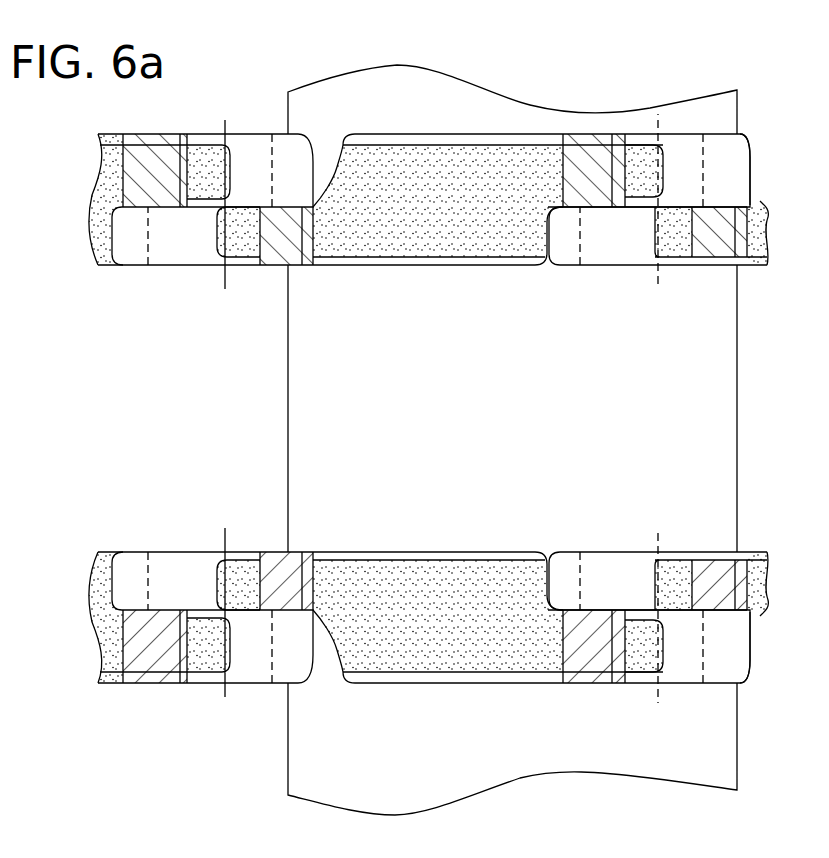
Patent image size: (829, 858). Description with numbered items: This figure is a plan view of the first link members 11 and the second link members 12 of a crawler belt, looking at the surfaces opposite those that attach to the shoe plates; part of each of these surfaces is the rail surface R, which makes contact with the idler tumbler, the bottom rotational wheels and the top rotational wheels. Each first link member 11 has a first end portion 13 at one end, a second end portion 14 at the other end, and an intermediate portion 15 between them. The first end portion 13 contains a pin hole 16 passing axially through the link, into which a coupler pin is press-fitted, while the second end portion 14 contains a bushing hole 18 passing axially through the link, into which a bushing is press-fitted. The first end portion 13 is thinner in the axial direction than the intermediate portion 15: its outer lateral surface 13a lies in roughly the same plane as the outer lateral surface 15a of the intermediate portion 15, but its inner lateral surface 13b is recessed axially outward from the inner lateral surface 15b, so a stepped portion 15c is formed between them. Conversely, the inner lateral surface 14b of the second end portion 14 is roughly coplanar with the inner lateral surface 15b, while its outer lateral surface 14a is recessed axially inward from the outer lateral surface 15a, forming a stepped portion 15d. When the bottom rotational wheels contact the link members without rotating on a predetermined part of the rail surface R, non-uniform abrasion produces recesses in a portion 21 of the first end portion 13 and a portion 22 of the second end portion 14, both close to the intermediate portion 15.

The first link member 11 is at (526, 510).
The second link member 12 is at (525, 112).
The first end portion 13 is at (650, 687).
The outer lateral surface of the first end portion 13a is at (699, 687).
The inner lateral surface of the first end portion 13b is at (675, 600).
The second end portion 14 is at (203, 532).
The outer lateral surface of the second end portion 14a is at (245, 613).
The inner lateral surface of the second end portion 14b is at (172, 551).
The intermediate portion 15 is at (390, 527).
The outer lateral surface of the intermediate portion 15a is at (465, 687).
The inner lateral surface of the intermediate portion 15b is at (427, 551).
The stepped portion 15c is at (552, 572).
The stepped portion 15d is at (329, 646).
The pin hole 16 is at (748, 655).
The bushing hole 18 is at (128, 576).
The portion of the first end portion 21 is at (584, 687).
The portion of the second end portion 22 is at (285, 558).
The rail surface R is at (407, 658).